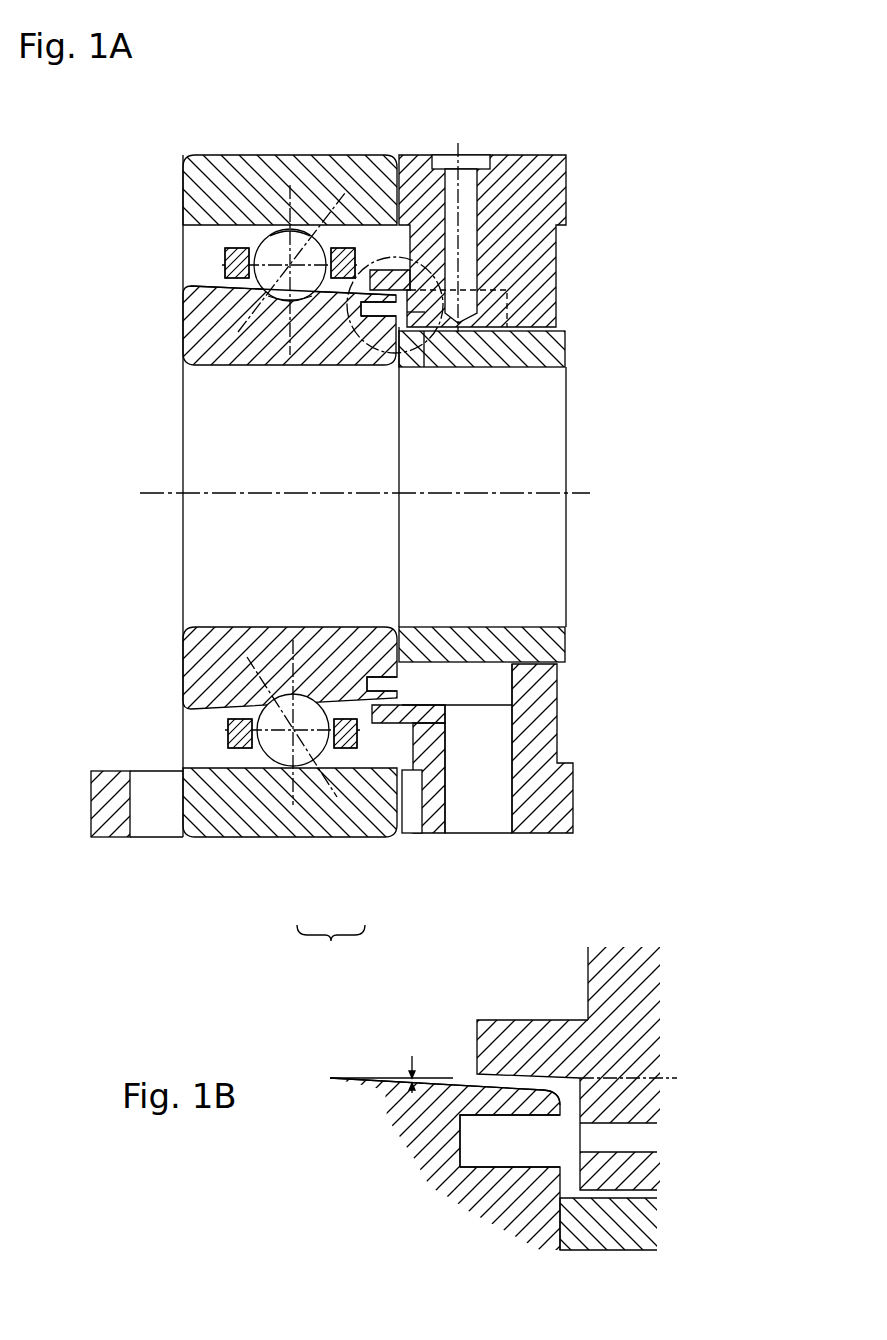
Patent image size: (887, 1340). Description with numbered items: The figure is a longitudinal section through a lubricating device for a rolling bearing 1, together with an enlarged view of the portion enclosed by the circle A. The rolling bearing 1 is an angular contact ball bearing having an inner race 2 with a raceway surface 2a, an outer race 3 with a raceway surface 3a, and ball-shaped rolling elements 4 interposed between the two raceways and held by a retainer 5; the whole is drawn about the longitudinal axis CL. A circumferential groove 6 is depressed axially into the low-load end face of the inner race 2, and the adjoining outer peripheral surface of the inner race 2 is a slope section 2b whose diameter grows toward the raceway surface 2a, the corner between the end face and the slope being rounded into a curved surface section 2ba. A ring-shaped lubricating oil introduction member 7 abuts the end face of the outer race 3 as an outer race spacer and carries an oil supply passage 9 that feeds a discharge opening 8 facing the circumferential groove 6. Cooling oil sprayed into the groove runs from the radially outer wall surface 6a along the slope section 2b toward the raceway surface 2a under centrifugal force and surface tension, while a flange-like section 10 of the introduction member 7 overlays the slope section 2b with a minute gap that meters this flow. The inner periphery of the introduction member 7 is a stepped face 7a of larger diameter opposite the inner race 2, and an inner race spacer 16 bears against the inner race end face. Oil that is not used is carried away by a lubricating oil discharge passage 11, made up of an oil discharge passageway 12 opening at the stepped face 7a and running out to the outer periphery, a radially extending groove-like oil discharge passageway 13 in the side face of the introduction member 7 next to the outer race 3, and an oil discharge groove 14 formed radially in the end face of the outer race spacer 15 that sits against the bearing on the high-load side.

In FIG. 1A, the rolling bearing 1 is at (162, 150).
In FIG. 1A, the inner race 2 is at (183, 331).
In FIG. 1B, the inner race 2 is at (408, 1133).
In FIG. 1A, the raceway surface 2a is at (280, 297).
In FIG. 1A, the slope section 2b is at (360, 290).
In FIG. 1B, the slope section 2b is at (440, 1082).
In FIG. 1B, the curved surface section 2ba is at (561, 1098).
In FIG. 1A, the outer race 3 is at (183, 187).
In FIG. 1A, the raceway surface 3a is at (300, 229).
In FIG. 1A, the rolling elements 4 is at (260, 242).
In FIG. 1A, the retainer 5 is at (225, 262).
In FIG. 1A, the circumferential groove 6 is at (363, 317).
In FIG. 1B, the circumferential groove 6 is at (463, 1146).
In FIG. 1A, the radially outer wall surface 6a is at (378, 330).
In FIG. 1B, the radially outer wall surface 6a is at (527, 1095).
In FIG. 1A, the lubricating oil introduction member 7 is at (530, 152).
In FIG. 1B, the lubricating oil introduction member 7 is at (680, 986).
In FIG. 1A, the stepped face 7a is at (432, 704).
In FIG. 1A, the discharge opening 8 is at (405, 300).
In FIG. 1B, the discharge opening 8 is at (630, 1140).
In FIG. 1A, the oil supply passage 9 is at (466, 253).
In FIG. 1A, the flange-like section 10 is at (383, 268).
In FIG. 1B, the flange-like section 10 is at (522, 1018).
In FIG. 1A, the lubricating oil discharge passage 11 is at (331, 947).
In FIG. 1A, the oil discharge passageway 12 is at (478, 810).
In FIG. 1A, the groove-like oil discharge passageway 13 is at (412, 822).
In FIG. 1A, the oil discharge groove 14 is at (153, 812).
In FIG. 1A, the outer race spacer 15 is at (110, 771).
In FIG. 1A, the inner race spacer 16 is at (565, 356).
In FIG. 1A, the circle A is at (357, 338).
In FIG. 1A, the longitudinal axis CL is at (580, 492).